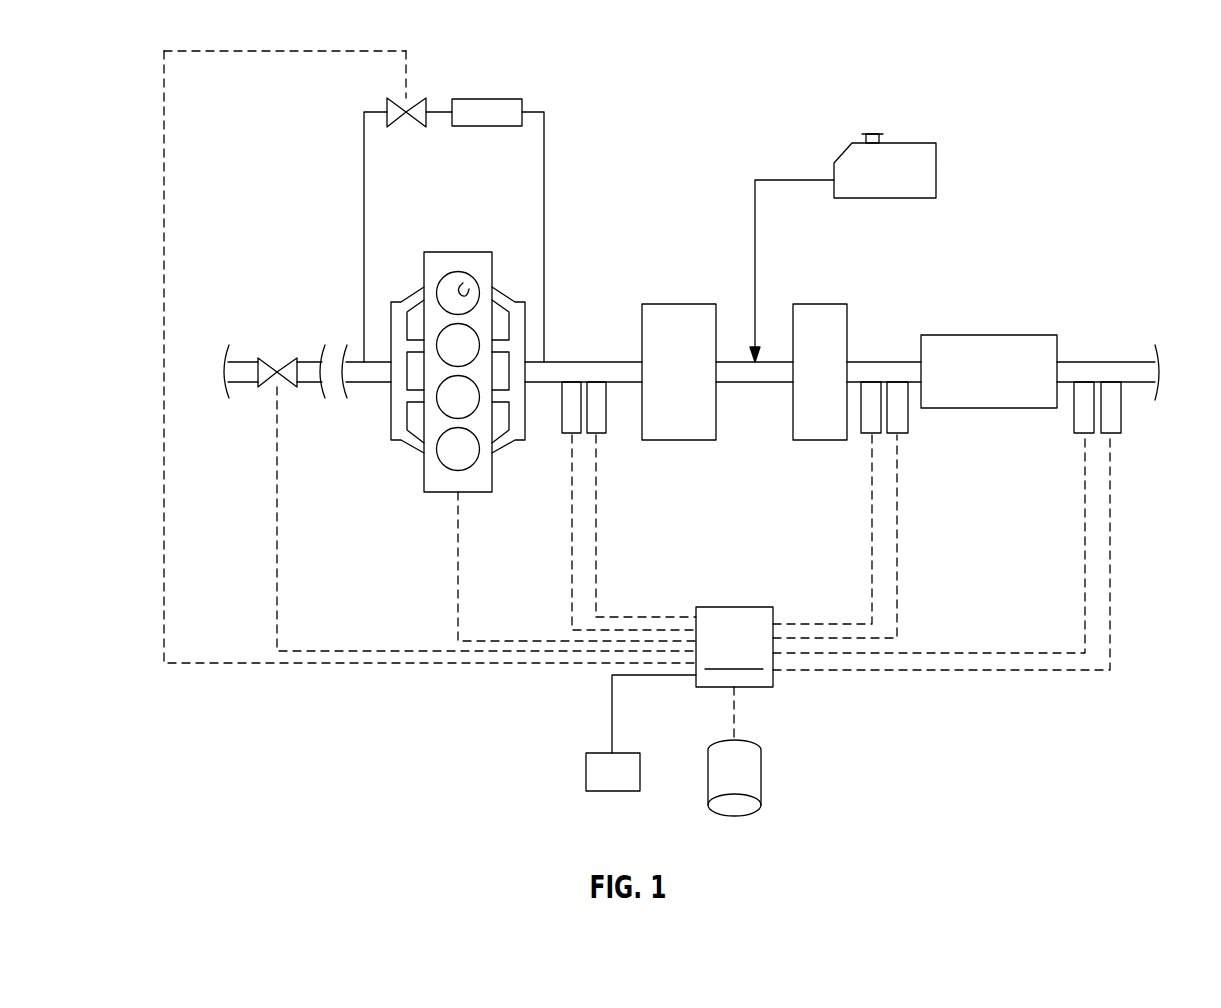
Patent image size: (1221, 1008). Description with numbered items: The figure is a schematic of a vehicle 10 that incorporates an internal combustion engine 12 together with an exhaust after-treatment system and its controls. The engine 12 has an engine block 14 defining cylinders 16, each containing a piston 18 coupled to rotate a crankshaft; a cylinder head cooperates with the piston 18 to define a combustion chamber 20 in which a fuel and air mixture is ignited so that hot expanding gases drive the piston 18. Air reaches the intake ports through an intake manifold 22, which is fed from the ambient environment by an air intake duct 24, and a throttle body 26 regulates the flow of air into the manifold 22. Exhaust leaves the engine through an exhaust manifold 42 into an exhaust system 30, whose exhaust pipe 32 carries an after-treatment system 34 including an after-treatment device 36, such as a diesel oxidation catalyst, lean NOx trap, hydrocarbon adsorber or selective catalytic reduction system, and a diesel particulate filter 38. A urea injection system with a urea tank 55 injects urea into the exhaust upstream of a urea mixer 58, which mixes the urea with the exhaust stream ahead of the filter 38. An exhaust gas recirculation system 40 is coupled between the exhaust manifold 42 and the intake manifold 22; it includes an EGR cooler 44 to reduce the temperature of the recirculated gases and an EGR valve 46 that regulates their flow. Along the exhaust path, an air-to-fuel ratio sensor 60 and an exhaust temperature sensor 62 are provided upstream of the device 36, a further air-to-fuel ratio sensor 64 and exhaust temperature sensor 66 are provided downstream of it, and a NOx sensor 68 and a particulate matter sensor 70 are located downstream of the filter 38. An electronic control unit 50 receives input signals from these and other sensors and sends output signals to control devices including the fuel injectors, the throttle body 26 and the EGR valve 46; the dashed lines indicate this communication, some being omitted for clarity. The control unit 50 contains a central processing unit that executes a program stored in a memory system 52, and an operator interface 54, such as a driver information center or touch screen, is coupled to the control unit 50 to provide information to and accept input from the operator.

The vehicle 10 is at (1007, 97).
The internal combustion engine 12 is at (517, 220).
The engine block 14 is at (432, 492).
The cylinder 16 is at (463, 283).
The piston 18 is at (445, 288).
The combustion chamber 20 is at (452, 283).
The intake manifold 22 is at (391, 430).
The air intake duct 24 is at (246, 382).
The throttle body 26 is at (277, 362).
The exhaust system 30 is at (1128, 312).
The exhaust pipe 32 is at (603, 362).
The after-treatment system 34 is at (925, 270).
The after-treatment device 36 is at (698, 304).
The diesel particulate filter 38 is at (1020, 335).
The exhaust gas recirculation system 40 is at (557, 60).
The exhaust manifold 42 is at (498, 453).
The EGR cooler 44 is at (492, 99).
The EGR valve 46 is at (387, 105).
The electronic control unit 50 is at (716, 607).
The memory system 52 is at (718, 742).
The operator interface 54 is at (596, 753).
The urea tank 55 is at (912, 143).
The urea mixer 58 is at (838, 304).
The air-to-fuel ratio sensor 60 is at (572, 435).
The exhaust temperature sensor 62 is at (596, 435).
The air-to-fuel ratio sensor 64 is at (872, 435).
The exhaust temperature sensor 66 is at (898, 435).
The NOx sensor 68 is at (1084, 435).
The particulate matter sensor 70 is at (1111, 435).